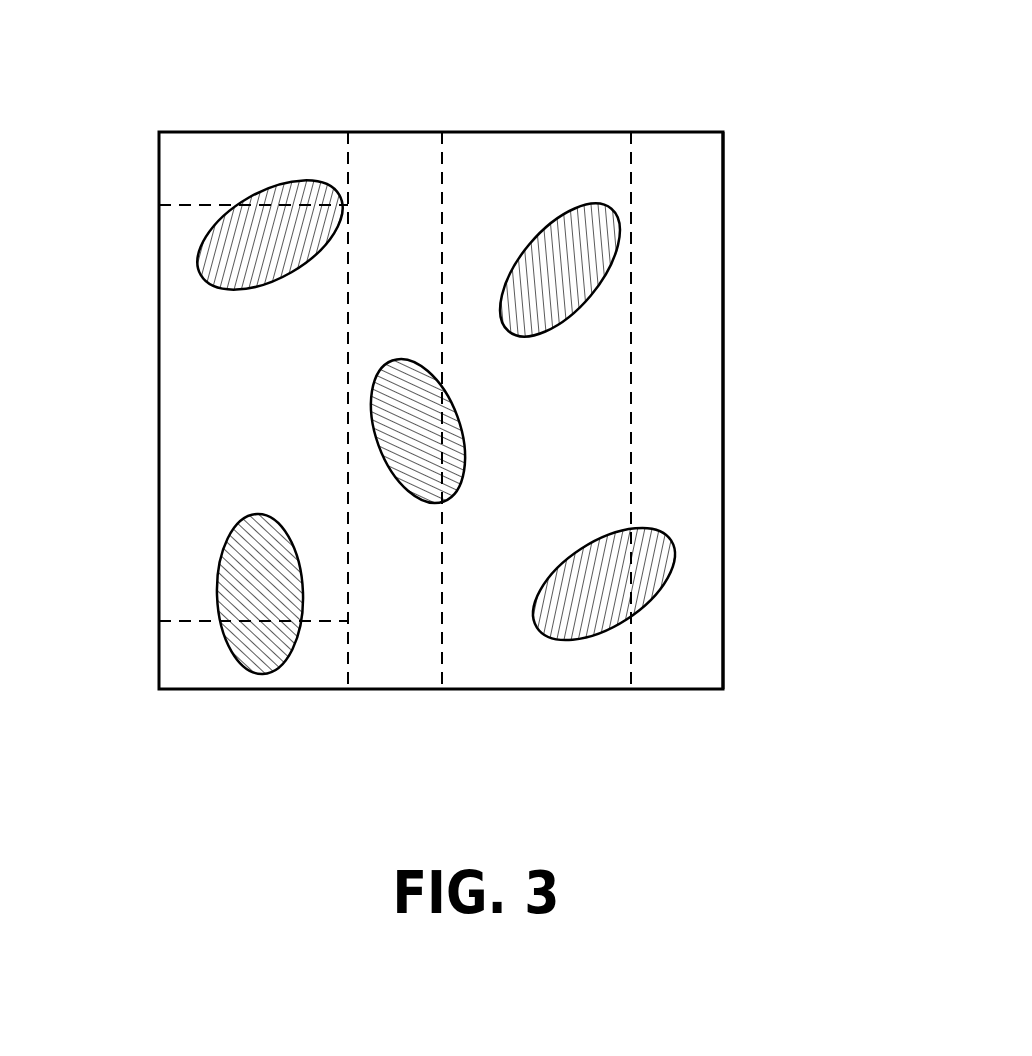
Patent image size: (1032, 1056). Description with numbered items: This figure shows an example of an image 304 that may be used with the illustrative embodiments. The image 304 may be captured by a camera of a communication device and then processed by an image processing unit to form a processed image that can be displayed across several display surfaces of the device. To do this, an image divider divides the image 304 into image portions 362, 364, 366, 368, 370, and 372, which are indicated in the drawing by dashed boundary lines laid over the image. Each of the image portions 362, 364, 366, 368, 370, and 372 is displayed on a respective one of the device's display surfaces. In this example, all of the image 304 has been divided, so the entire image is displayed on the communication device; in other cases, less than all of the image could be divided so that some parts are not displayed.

The image 304 is at (803, 155).
The image portion 362 is at (203, 162).
The image portion 368 is at (390, 167).
The image portion 370 is at (527, 170).
The image portion 364 is at (198, 415).
The image portion 366 is at (192, 660).
The image portion 372 is at (692, 294).